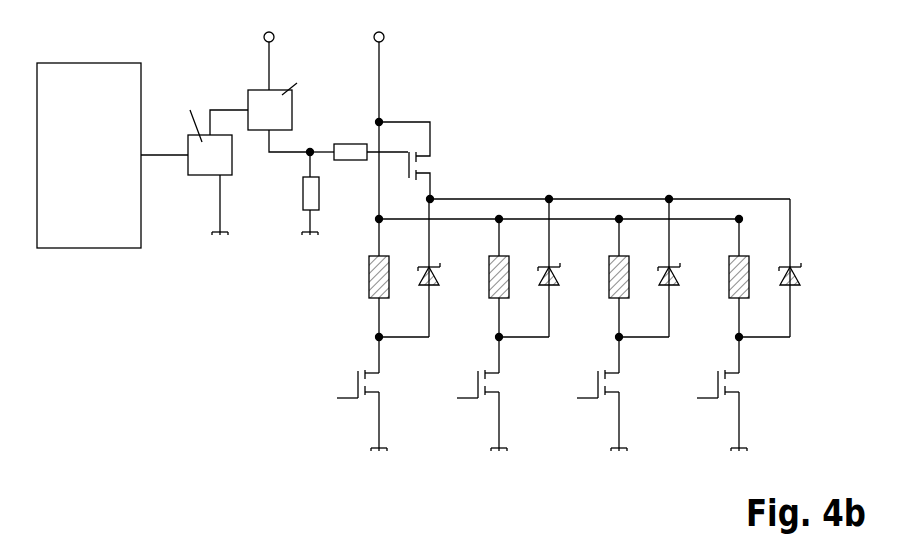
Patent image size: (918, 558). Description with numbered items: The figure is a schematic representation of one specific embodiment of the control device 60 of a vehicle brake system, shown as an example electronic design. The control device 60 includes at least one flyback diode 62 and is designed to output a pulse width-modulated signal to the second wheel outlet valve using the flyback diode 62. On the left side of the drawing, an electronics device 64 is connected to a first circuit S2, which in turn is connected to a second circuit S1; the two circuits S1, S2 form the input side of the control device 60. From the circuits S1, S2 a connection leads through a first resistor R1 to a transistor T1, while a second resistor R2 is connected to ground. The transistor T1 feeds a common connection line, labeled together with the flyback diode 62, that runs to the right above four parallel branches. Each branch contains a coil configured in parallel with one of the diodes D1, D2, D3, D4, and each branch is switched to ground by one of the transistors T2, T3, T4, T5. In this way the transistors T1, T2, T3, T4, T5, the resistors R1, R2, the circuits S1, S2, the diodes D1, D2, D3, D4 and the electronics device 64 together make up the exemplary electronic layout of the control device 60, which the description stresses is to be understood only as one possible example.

The control device 60 is at (197, 342).
The flyback diode 62 is at (805, 196).
The electronics device 64 is at (88, 248).
The circuit S1 is at (255, 88).
The circuit S2 is at (198, 175).
The resistor R1 is at (358, 142).
The resistor R2 is at (324, 193).
The transistor T1 is at (418, 160).
The transistor T2 is at (372, 353).
The transistor T3 is at (492, 335).
The transistor T4 is at (612, 335).
The transistor T5 is at (732, 335).
The diode D1 is at (422, 268).
The diode D2 is at (542, 268).
The diode D3 is at (662, 268).
The diode D4 is at (783, 268).